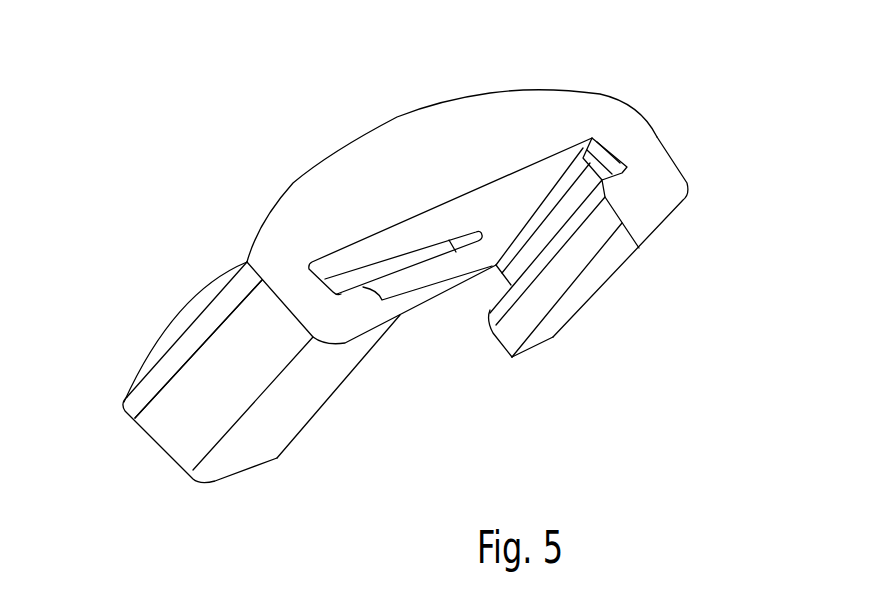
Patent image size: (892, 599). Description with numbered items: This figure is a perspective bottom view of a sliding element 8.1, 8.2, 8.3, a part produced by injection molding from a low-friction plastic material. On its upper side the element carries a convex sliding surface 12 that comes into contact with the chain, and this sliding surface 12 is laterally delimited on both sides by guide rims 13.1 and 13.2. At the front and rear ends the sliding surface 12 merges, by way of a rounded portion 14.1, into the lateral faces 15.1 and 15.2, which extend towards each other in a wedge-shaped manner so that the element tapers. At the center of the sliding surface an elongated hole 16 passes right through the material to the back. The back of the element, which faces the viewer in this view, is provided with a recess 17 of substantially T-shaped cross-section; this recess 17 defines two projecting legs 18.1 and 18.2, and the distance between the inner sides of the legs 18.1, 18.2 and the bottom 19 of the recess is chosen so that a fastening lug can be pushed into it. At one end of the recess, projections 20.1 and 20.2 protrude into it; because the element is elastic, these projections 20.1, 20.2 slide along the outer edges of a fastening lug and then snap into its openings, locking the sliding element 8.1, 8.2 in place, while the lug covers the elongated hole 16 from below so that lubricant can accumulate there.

The sliding surface 12 is at (396, 285).
The guide rim 13.1 is at (272, 210).
The guide rim 13.2 is at (155, 328).
The rounded portion 14.1 is at (158, 370).
The lateral face 15.1 is at (203, 388).
The lateral face 15.2 is at (657, 125).
The elongated hole 16 is at (410, 259).
The recess 17 is at (428, 364).
The projecting leg 18.1 is at (363, 311).
The projecting leg 18.2 is at (628, 194).
The bottom of the T-shaped recess 19 is at (493, 207).
The projection 20.1 is at (323, 285).
The projection 20.2 is at (604, 166).
The sliding element 8.1 is at (642, 418).
The sliding element 8.2 is at (642, 418).
The third line element 8.3 is at (581, 384).